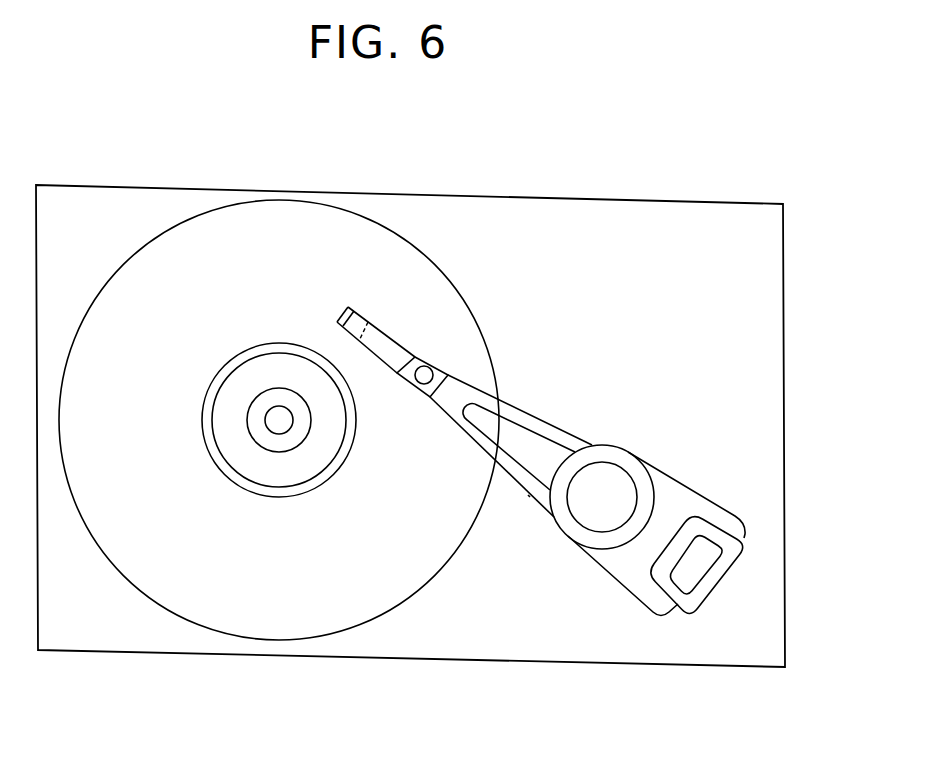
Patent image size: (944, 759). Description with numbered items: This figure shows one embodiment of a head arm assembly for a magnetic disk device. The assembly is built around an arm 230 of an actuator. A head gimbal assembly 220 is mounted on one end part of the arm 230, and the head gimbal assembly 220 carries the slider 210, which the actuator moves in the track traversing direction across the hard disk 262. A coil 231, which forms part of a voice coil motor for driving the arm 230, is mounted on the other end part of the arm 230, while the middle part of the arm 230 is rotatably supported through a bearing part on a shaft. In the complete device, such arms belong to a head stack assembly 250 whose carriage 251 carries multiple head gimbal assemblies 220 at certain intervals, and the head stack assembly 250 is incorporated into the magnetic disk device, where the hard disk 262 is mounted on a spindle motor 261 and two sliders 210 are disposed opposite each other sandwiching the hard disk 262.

The slider 210 is at (358, 310).
The head gimbal assembly 220 is at (472, 437).
The arm 230 is at (528, 495).
The coil 231 is at (722, 583).
The head stack assembly 250 is at (608, 573).
The carriage 251 is at (616, 446).
The spindle motor 261 is at (274, 434).
The hard disk 262 is at (198, 625).